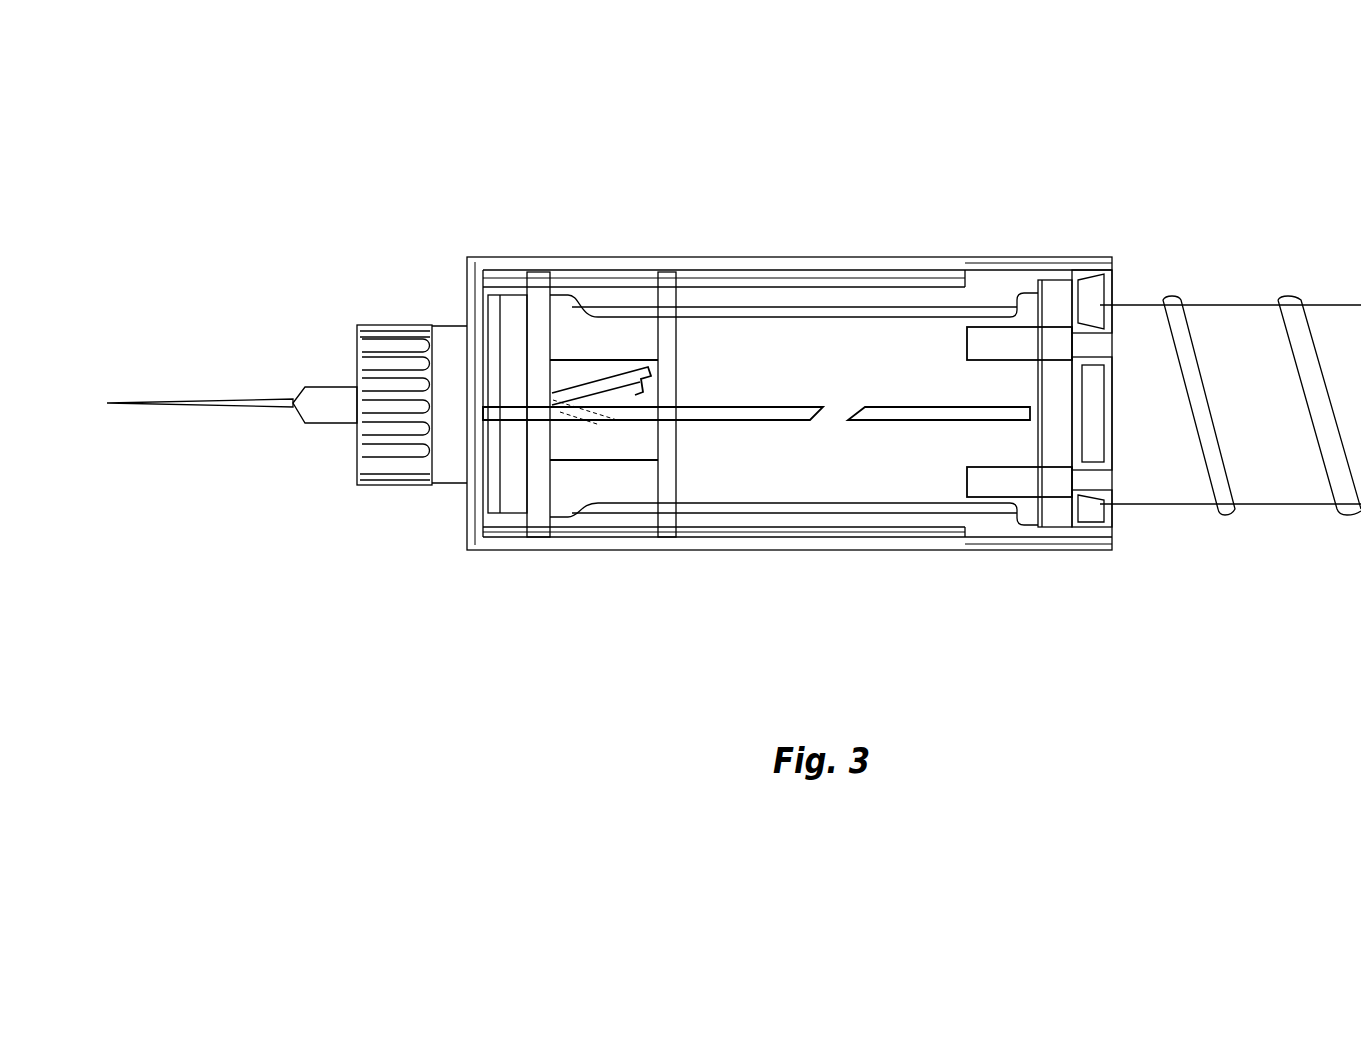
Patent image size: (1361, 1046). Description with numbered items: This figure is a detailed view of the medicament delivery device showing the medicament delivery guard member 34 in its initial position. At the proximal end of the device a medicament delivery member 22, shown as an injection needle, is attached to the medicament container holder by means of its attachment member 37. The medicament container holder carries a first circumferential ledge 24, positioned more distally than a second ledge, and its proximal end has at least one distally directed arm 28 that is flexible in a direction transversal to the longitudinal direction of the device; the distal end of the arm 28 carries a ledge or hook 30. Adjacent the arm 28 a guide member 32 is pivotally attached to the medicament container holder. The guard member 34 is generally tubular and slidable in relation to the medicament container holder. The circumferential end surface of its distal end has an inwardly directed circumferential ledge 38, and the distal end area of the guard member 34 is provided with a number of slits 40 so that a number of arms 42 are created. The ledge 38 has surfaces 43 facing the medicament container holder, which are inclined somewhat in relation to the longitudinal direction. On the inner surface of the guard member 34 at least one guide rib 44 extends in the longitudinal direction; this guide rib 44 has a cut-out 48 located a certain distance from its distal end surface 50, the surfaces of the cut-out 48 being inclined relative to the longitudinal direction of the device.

The medicament delivery member 22 is at (398, 300).
The first circumferential ledge 24 is at (1062, 415).
The distally directed arm 28 is at (597, 385).
The hook 30 is at (642, 385).
The guide member 32 is at (570, 407).
The medicament delivery guard member 34 is at (798, 260).
The attachment member 37 is at (462, 450).
The inwardly directed circumferential ledge 38 is at (1082, 538).
The slits 40 is at (1007, 340).
The arms 42 is at (1008, 447).
The surfaces 43 is at (1088, 518).
The guide rib 44 is at (783, 412).
The cut-out 48 is at (837, 407).
The distal end surface 50 is at (1030, 413).